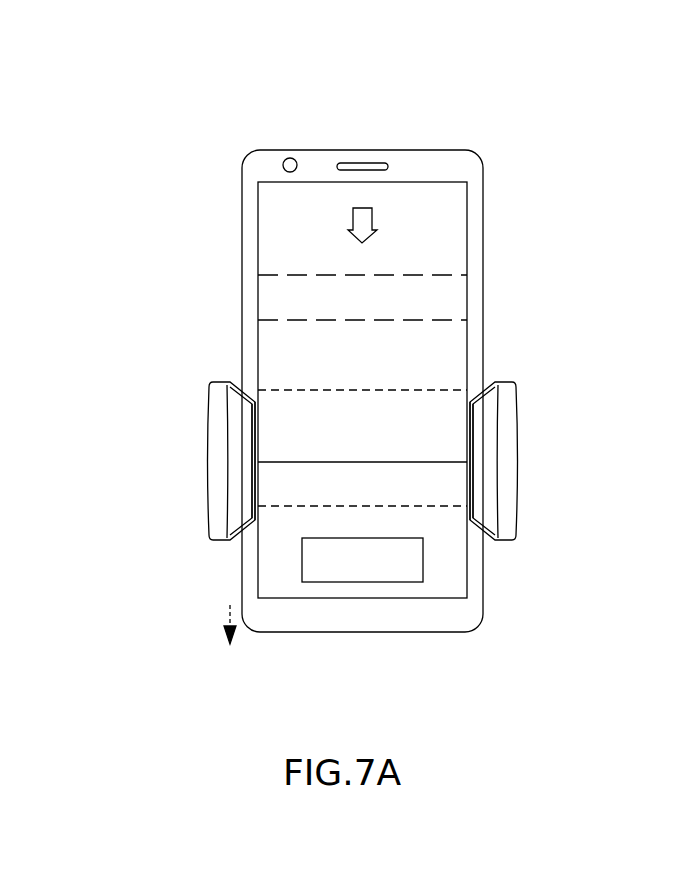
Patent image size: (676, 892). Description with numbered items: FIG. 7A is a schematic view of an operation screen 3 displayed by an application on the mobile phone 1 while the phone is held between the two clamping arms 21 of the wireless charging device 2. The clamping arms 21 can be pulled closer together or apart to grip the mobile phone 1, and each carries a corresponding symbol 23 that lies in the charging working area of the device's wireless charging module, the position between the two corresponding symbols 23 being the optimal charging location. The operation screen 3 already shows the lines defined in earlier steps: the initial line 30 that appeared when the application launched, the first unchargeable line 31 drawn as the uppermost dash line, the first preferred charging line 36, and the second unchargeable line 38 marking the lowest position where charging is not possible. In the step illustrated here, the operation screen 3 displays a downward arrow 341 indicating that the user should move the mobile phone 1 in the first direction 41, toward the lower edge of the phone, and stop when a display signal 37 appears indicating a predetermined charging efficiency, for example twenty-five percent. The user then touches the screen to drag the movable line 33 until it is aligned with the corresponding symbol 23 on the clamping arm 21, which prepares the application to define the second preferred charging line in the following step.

The mobile phone 1 is at (442, 158).
The operation screen 3 is at (270, 228).
The downward arrow 341 is at (353, 213).
The first unchargeable line 31 is at (422, 273).
The first preferred charging line 36 is at (364, 318).
The initial line 30 is at (364, 388).
The movable line 33 is at (361, 460).
The second unchargeable line 38 is at (363, 506).
The display signal 37 is at (423, 560).
The wireless charging device 2 is at (376, 448).
The clamping arm 21 is at (238, 410).
The corresponding symbol 23 is at (243, 455).
The first direction 41 is at (230, 605).